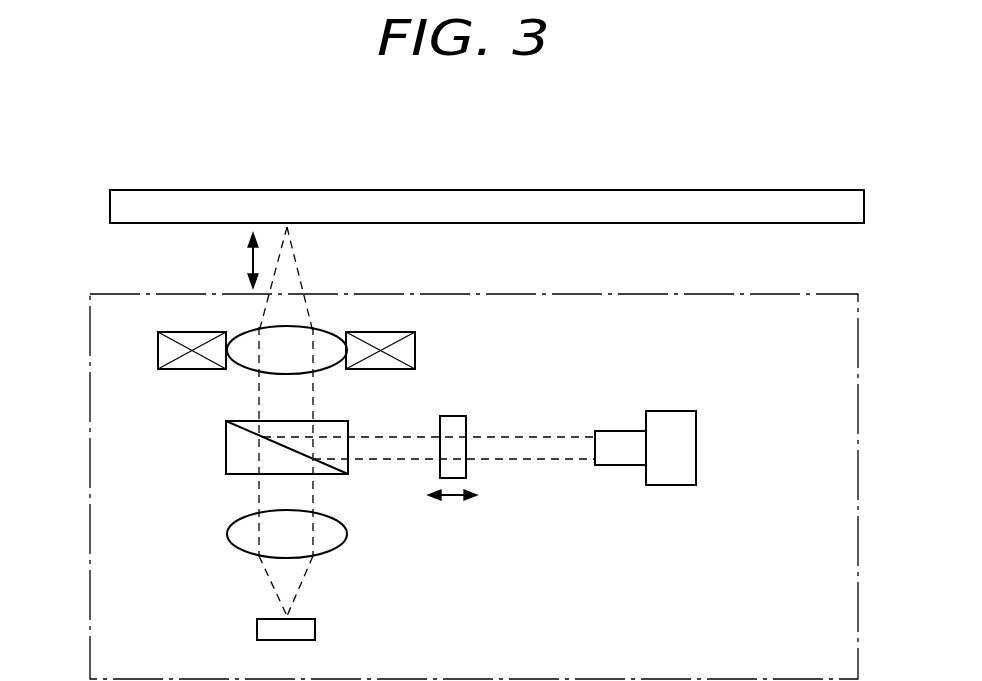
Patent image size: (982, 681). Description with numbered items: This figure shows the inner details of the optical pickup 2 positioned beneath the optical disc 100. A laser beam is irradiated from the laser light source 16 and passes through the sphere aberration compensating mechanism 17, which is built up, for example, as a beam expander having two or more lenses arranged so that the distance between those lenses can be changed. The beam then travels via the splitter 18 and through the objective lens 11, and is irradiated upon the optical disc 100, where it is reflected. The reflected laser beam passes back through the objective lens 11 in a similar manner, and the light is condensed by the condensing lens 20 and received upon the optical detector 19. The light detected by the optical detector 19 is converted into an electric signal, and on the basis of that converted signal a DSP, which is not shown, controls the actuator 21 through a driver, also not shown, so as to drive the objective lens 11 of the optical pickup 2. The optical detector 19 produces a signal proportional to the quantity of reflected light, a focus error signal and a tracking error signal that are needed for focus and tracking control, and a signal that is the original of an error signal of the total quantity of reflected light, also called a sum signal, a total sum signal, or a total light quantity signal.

The optical disc 100 is at (262, 200).
The optical pickup 2 is at (768, 270).
The objective lens 11 is at (239, 334).
The actuator 21 is at (383, 338).
The sphere aberration compensating mechanism 17 is at (460, 428).
The splitter 18 is at (233, 457).
The laser light source 16 is at (675, 477).
The condensing lens 20 is at (336, 530).
The optical detector 19 is at (308, 630).